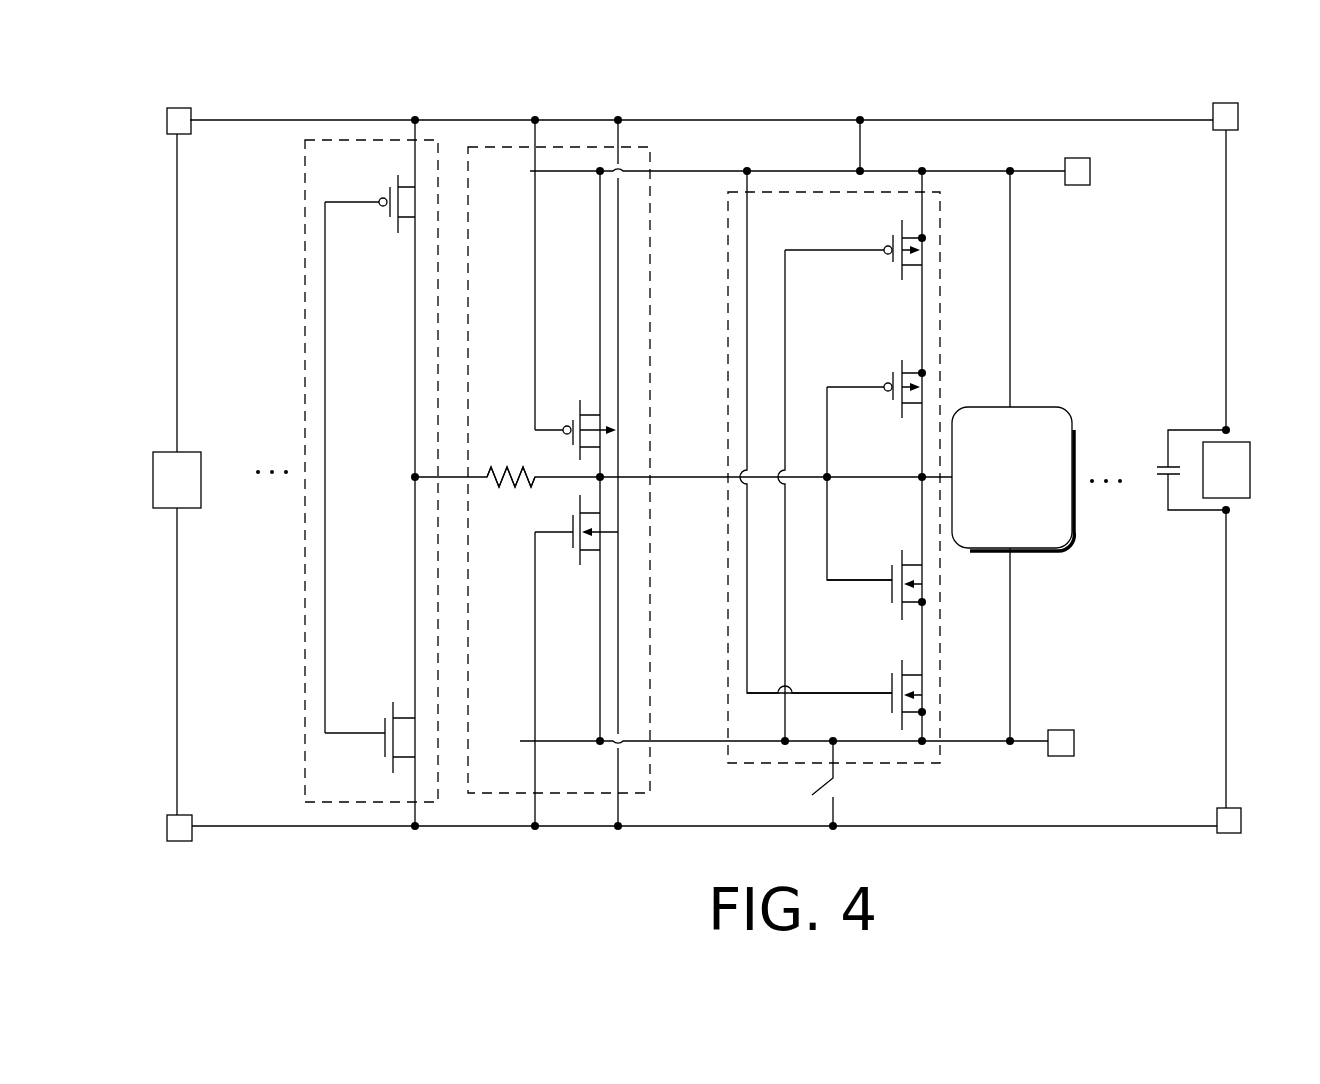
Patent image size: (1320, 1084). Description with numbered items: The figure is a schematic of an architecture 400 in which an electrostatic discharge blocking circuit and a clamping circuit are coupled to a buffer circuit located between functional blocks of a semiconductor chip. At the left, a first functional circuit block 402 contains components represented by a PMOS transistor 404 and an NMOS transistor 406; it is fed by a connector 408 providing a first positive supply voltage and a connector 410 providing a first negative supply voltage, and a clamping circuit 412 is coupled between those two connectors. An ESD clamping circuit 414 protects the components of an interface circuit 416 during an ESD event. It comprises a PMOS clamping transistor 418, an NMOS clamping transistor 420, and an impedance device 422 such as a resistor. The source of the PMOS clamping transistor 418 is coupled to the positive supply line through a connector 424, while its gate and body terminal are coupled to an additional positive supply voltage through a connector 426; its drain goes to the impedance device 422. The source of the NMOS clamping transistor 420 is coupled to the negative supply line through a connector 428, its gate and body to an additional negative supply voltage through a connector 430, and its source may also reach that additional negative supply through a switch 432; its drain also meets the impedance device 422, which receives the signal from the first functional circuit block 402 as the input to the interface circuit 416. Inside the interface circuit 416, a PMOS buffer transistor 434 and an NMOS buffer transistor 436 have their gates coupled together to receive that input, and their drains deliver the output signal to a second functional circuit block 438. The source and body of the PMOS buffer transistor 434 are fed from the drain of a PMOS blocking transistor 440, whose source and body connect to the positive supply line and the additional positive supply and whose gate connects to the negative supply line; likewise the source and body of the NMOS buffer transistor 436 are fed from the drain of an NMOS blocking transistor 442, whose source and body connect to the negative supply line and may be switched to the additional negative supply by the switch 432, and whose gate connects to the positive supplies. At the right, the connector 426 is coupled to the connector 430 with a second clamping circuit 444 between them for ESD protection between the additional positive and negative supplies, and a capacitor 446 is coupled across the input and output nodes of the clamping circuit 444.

The architecture 400 is at (348, 880).
The first functional circuit block 402 is at (305, 266).
The PMOS transistor 404 is at (397, 177).
The NMOS transistor 406 is at (393, 703).
The connector 408 is at (166, 122).
The connector 410 is at (167, 829).
The clamping circuit 412 is at (196, 452).
The ESD clamping circuit 414 is at (652, 385).
The interface circuit 416 is at (728, 263).
The PMOS clamping transistor 418 is at (577, 412).
The NMOS clamping transistor 420 is at (578, 558).
The impedance device 422 is at (528, 466).
The connector 424 is at (1080, 185).
The connector 426 is at (1238, 118).
The connector 428 is at (1064, 756).
The connector 430 is at (1241, 822).
The switch 432 is at (836, 811).
The PMOS buffer transistor 434 is at (900, 367).
The NMOS buffer transistor 436 is at (900, 557).
The second functional circuit block 438 is at (1013, 479).
The PMOS blocking transistor 440 is at (901, 279).
The NMOS blocking transistor 442 is at (900, 665).
The second clamping circuit 444 is at (1250, 470).
The capacitor 446 is at (1160, 468).